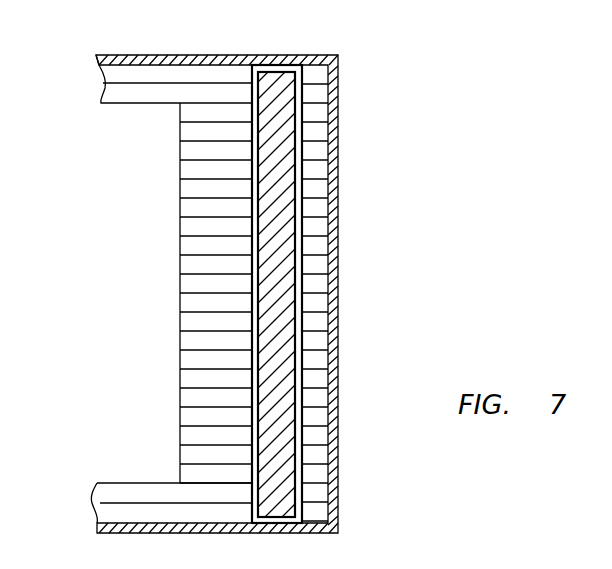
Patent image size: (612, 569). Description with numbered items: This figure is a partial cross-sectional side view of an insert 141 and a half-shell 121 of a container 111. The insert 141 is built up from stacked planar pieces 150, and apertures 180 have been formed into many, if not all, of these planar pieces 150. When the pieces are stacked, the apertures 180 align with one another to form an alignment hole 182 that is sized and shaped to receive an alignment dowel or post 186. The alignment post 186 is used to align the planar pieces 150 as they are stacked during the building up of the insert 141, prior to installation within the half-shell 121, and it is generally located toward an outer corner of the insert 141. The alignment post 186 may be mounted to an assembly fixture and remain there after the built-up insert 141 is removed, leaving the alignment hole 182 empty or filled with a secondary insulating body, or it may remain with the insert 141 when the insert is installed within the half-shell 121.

The container 111 is at (461, 84).
The half-shell 121 is at (338, 471).
The insert 141 is at (137, 327).
The planar pieces 150 is at (118, 75).
The apertures 180 is at (252, 95).
The alignment hole 182 is at (320, 312).
The alignment post 186 is at (278, 226).